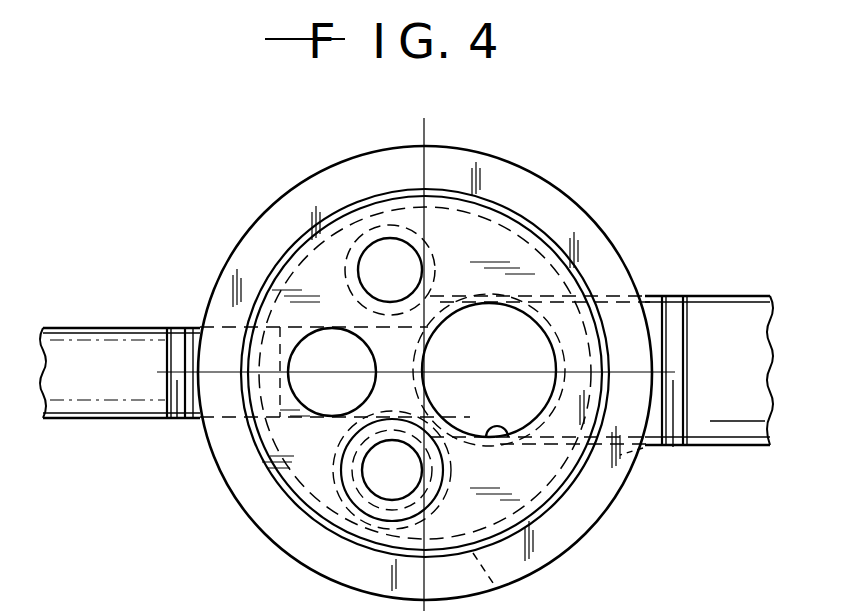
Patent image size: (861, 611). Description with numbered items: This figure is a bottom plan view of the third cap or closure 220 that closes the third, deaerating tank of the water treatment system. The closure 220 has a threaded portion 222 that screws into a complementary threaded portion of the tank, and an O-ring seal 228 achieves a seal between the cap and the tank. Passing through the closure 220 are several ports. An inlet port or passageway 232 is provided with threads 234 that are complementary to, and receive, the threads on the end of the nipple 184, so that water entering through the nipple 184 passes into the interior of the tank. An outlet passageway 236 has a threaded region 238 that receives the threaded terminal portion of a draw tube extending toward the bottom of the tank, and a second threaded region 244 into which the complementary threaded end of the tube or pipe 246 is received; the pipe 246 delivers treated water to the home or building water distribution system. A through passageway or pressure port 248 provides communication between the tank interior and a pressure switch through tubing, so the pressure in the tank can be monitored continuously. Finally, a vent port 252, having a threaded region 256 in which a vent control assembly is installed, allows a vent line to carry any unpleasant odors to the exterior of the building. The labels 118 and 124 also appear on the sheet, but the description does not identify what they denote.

The third cap or closure 220 is at (548, 217).
The threaded portion 222 is at (560, 244).
The O-ring seal 228 is at (278, 260).
The through passageway or pressure port 248 is at (381, 257).
The inlet port or passageway 232 is at (312, 348).
The vent port 252 is at (367, 477).
The outlet passageway 236 is at (515, 364).
The threaded region 238 is at (513, 440).
The nipple 184 is at (88, 398).
The tube or pipe 246 is at (718, 327).
The threads 234 is at (225, 432).
The threaded region 244 is at (643, 448).
The threaded region 256 is at (497, 584).
The component 118 is at (706, 595).
The component 124 is at (791, 595).